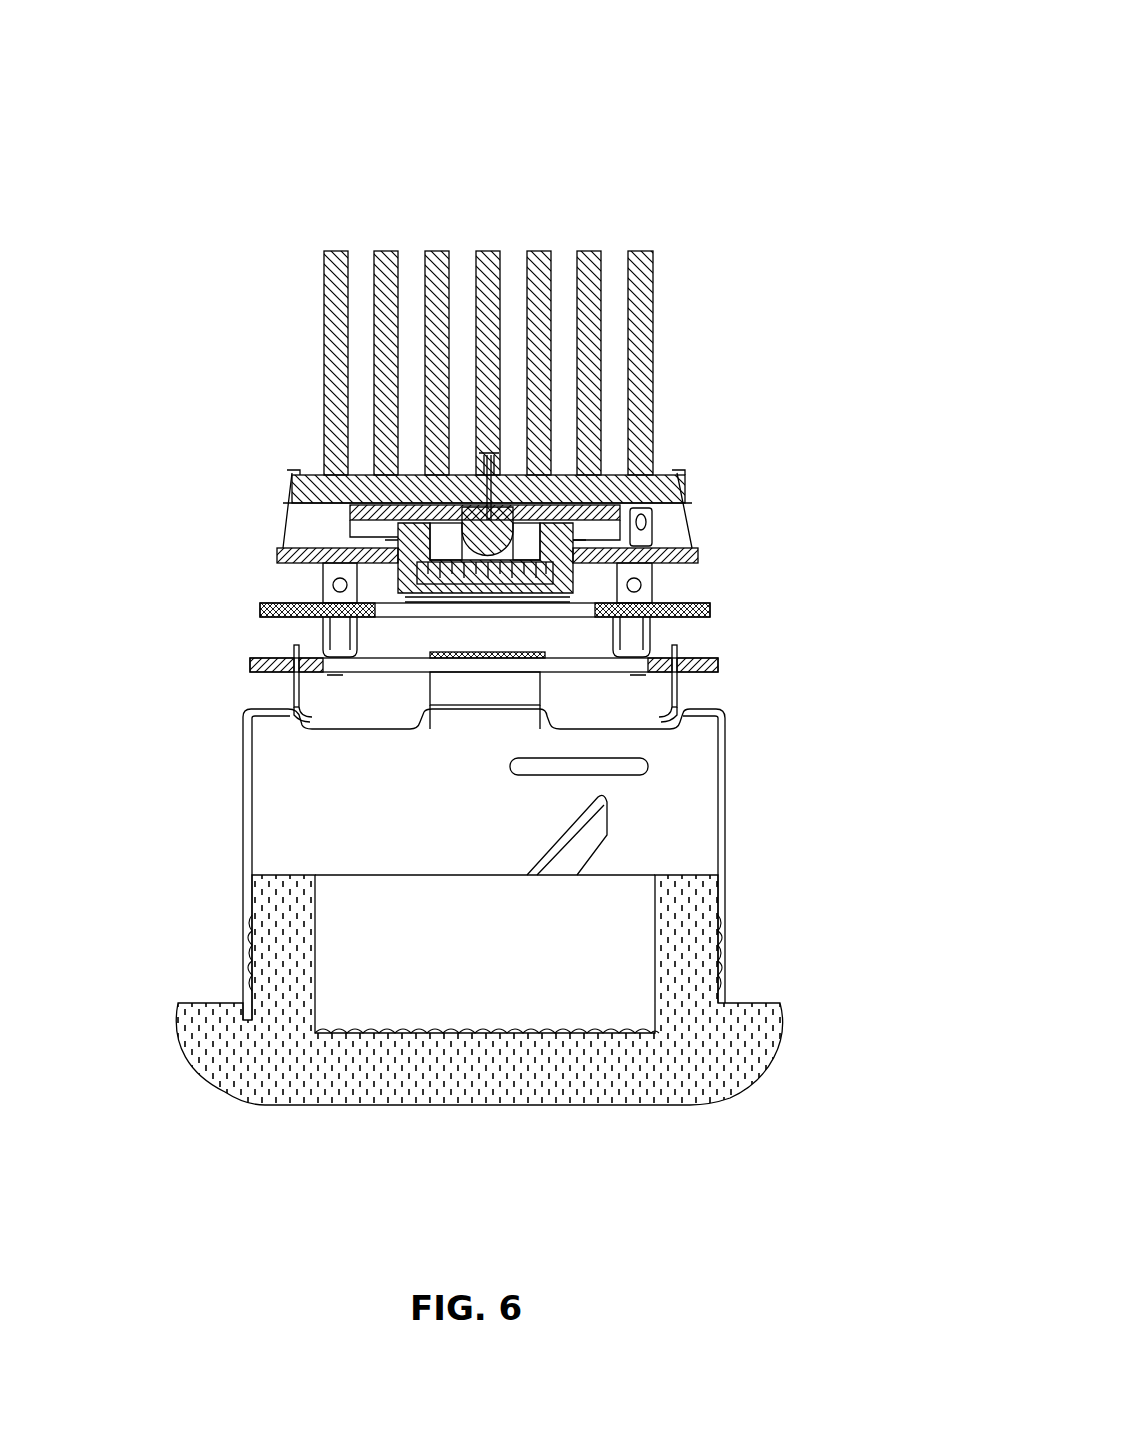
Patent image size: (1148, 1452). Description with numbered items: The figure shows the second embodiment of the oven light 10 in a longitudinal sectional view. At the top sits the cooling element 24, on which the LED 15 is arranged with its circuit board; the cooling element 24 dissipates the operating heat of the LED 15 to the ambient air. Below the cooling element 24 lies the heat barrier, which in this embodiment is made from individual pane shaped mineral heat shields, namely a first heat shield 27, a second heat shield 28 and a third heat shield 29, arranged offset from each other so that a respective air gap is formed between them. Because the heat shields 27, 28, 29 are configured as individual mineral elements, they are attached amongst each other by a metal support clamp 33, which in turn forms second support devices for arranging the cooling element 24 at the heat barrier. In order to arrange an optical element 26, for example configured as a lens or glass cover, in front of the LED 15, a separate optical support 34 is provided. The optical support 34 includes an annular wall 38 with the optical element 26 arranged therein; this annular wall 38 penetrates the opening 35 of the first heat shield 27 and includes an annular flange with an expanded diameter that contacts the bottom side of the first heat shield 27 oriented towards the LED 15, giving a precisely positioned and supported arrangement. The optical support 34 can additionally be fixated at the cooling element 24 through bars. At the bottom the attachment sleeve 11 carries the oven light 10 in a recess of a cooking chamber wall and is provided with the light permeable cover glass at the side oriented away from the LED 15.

The oven light 10 is at (775, 124).
The cooling element 24 is at (388, 232).
The LED 15 is at (476, 502).
The optical support 34 is at (614, 542).
The first heat shield 27 is at (716, 558).
The annular wall 38 is at (393, 577).
The support clamp 33 is at (318, 634).
The second heat shield 28 is at (726, 612).
The third heat shield 29 is at (734, 665).
The opening 35 is at (448, 550).
The optical element 26 is at (522, 590).
The attachment sleeve 11 is at (750, 912).